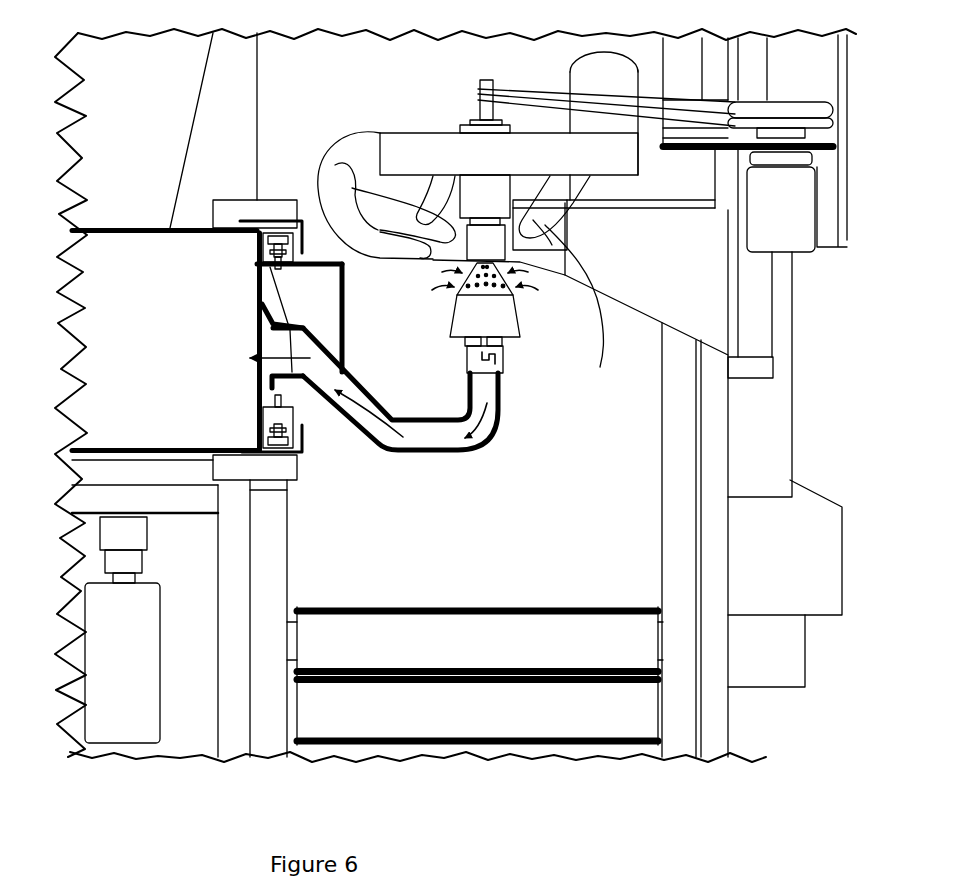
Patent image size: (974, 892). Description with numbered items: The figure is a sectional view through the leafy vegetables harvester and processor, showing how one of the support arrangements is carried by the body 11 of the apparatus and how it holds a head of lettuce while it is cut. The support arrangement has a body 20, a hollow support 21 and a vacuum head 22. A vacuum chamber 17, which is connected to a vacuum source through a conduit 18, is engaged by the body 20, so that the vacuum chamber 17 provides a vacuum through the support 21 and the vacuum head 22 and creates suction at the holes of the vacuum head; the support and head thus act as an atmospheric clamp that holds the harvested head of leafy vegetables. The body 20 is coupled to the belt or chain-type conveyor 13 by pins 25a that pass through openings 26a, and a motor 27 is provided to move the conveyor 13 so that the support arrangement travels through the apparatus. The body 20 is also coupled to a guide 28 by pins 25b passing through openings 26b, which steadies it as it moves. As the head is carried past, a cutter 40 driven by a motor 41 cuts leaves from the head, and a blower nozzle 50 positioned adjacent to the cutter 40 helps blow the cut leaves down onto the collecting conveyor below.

The body 11 is at (713, 557).
The conveyor 13 is at (235, 462).
The vacuum chamber 17 is at (185, 227).
The conduit 18 is at (155, 107).
The body 20 is at (402, 300).
The support 21 is at (394, 418).
The vacuum head 22 is at (503, 324).
The pins 25a is at (290, 405).
The pins 25b is at (285, 264).
The openings 26a is at (262, 402).
The openings 26b is at (265, 268).
The motor 27 is at (142, 600).
The guide 28 is at (268, 207).
The cutter 40 is at (445, 272).
The motor 41 is at (798, 230).
The blower nozzle 50 is at (440, 213).